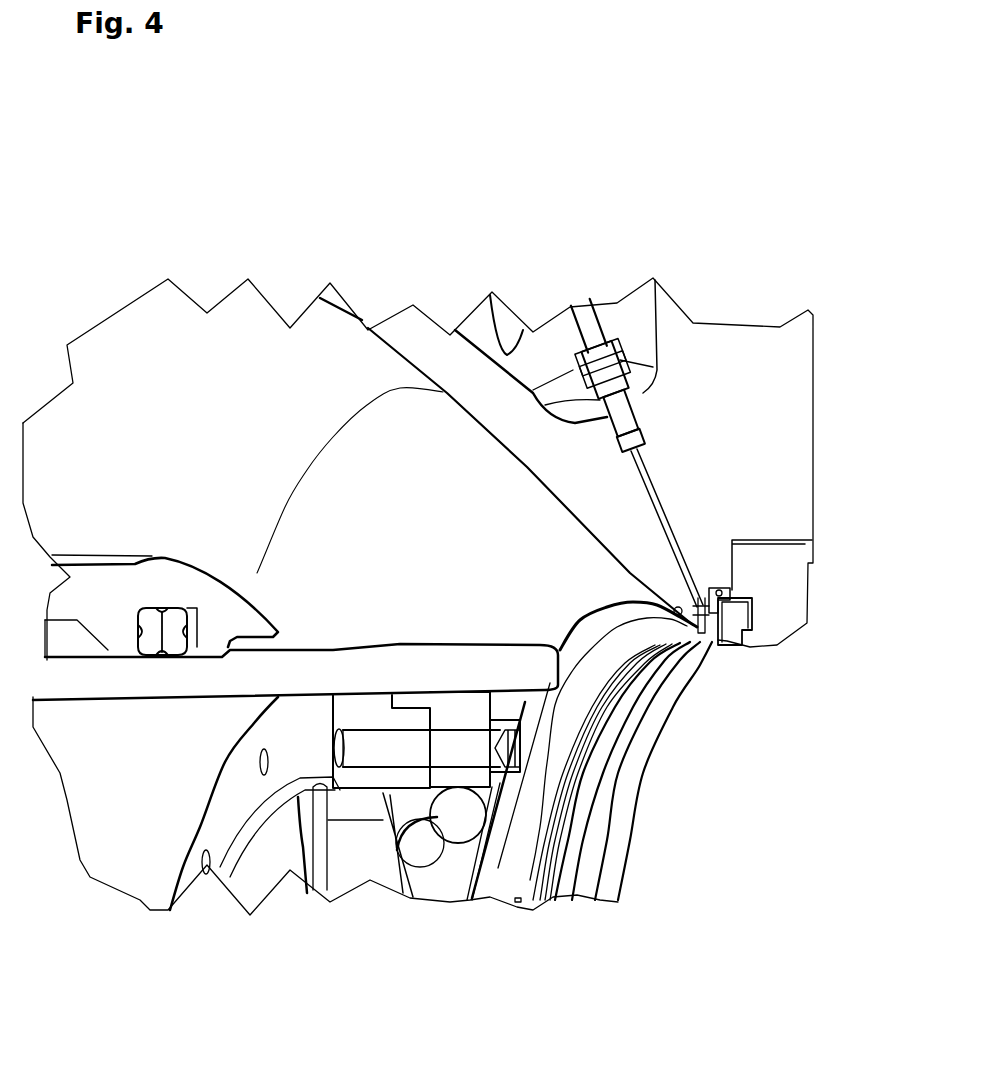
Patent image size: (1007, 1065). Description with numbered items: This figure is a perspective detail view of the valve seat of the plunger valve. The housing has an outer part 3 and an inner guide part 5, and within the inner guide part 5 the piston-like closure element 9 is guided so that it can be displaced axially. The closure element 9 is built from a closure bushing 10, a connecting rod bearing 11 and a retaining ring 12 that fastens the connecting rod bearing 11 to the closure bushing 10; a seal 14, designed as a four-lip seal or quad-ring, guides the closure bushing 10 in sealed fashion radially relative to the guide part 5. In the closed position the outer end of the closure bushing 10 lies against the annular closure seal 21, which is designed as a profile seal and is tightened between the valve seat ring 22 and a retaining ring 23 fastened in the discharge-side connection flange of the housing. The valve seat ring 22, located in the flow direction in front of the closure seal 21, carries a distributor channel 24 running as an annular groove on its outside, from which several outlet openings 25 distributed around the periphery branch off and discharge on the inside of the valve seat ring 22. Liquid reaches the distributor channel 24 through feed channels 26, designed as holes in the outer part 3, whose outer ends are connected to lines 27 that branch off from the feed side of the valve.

The outer part 3 is at (435, 348).
The inner guide part 5 is at (108, 603).
The closure element 9 is at (412, 618).
The closure bushing 10 is at (160, 683).
The connecting rod bearing 11 is at (353, 713).
The retaining ring 12 is at (468, 707).
The seal 14 is at (161, 630).
The closure seal 21 is at (727, 625).
The valve seat ring 22 is at (597, 647).
The retaining ring 23 is at (775, 590).
The distributor channel 24 is at (703, 610).
The outlet openings 25 is at (540, 810).
The feed channels 26 is at (655, 485).
The lines 27 is at (583, 318).